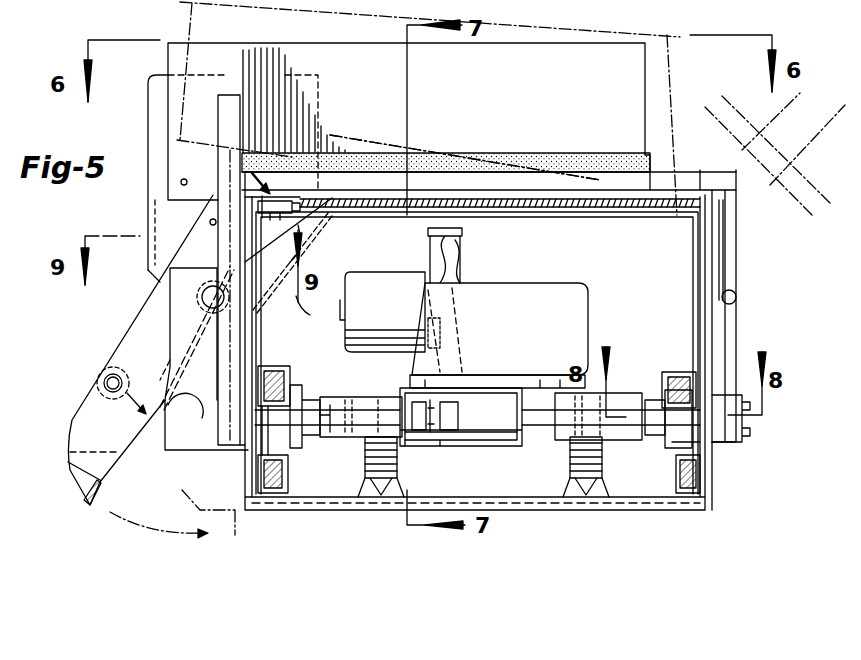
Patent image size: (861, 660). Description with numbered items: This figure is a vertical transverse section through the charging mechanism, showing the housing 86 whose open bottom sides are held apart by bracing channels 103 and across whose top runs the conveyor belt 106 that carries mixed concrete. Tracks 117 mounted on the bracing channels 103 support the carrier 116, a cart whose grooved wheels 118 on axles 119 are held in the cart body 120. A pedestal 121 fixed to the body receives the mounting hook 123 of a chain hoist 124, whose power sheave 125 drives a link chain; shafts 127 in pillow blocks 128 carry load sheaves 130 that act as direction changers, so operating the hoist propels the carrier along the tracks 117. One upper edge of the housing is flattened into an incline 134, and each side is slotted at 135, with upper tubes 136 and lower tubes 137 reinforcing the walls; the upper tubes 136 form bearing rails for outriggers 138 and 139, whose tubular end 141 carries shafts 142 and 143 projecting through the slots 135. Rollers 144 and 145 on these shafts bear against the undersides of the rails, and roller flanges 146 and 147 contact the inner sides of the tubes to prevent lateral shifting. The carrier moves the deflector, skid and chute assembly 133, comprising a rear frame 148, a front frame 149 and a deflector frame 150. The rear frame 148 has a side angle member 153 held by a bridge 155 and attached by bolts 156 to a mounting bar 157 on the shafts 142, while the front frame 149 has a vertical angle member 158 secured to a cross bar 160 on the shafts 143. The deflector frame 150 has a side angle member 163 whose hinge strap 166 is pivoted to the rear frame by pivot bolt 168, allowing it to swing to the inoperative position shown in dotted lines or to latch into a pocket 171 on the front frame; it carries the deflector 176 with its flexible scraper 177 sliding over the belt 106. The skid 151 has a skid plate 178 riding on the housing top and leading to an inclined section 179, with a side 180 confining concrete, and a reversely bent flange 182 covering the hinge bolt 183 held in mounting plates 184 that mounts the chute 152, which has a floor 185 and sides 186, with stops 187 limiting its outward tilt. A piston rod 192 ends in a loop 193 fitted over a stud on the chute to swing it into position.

The housing 86 is at (696, 221).
The bracing channels 103 is at (705, 500).
The conveyor belt 106 is at (592, 178).
The carrier 116 is at (534, 375).
The tracks 117 is at (400, 488).
The grooved wheels 118 is at (598, 470).
The axles 119 is at (445, 442).
The cart body 120 is at (510, 450).
The pedestal 121 is at (458, 258).
The mounting hook 123 is at (452, 242).
The chain hoist 124 is at (540, 282).
The power sheave 125 is at (442, 326).
The shafts 127 is at (460, 410).
The pillow blocks 128 is at (408, 393).
The load sheave 130 is at (448, 432).
The deflector, skid and chute assembly 133 is at (128, 310).
The incline 134 is at (325, 210).
The slots 135 is at (244, 448).
The upper tubes 136 is at (275, 368).
The lower tubes 137 is at (290, 482).
The outriggers 138 is at (630, 380).
The outriggers 139 is at (370, 398).
The tubular end 141 is at (352, 437).
The shafts 142 is at (700, 460).
The shafts 143 is at (364, 396).
The rollers 144 is at (654, 392).
The rollers 145 is at (296, 395).
The roller flanges 146 is at (672, 470).
The roller flanges 147 is at (372, 472).
The rear frame 148 is at (722, 390).
The front frame 149 is at (225, 447).
The deflector frame 150 is at (695, 168).
The skid 151 is at (305, 232).
The chute 152 is at (80, 428).
The side angle member 153 is at (738, 320).
The bridge 155 is at (772, 176).
The bolts 156 is at (746, 428).
The mounting bar 157 is at (736, 396).
The vertical angle member 158 is at (218, 112).
The cross bar 160 is at (238, 452).
The side angle member 163 is at (538, 160).
The hinge strap 166 is at (722, 250).
The pivot bolt 168 is at (722, 295).
The pocket 171 is at (272, 186).
The deflector 176 is at (530, 82).
The flexible scraper 177 is at (476, 152).
The skid plate 178 is at (352, 201).
The inclined section 179 is at (302, 261).
The side 180 is at (148, 206).
The reversely bent flange 182 is at (158, 280).
The hinge bolt 183 is at (202, 296).
The mounting plates 184 is at (180, 335).
The floor 185 is at (70, 452).
The sides 186 is at (100, 392).
The stops 187 is at (210, 222).
The piston rod 192 is at (172, 362).
The loop 193 is at (103, 376).